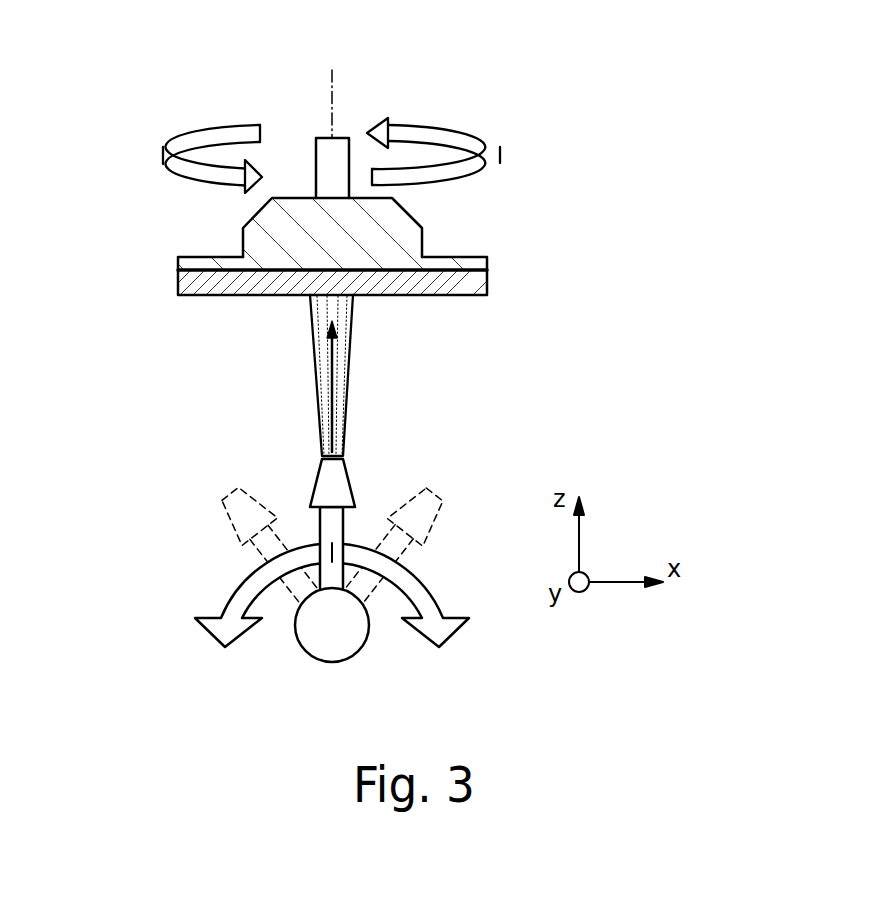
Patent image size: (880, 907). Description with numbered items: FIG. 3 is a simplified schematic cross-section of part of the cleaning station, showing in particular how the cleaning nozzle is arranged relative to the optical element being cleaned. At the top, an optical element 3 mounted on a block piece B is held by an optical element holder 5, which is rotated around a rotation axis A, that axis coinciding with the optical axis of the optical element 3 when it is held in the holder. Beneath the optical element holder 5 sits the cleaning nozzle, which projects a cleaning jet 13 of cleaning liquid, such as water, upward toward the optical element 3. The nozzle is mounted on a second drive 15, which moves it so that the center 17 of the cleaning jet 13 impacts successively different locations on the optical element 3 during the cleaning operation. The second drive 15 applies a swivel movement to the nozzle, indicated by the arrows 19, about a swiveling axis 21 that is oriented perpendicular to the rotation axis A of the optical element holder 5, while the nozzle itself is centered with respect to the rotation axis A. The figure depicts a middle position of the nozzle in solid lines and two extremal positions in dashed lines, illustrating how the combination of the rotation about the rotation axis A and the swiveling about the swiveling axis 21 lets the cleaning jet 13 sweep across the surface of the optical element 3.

The rotation axis A is at (333, 98).
The block piece B is at (255, 221).
The optical element 3 is at (442, 296).
The optical element holder 5 is at (520, 242).
The cleaning jet 13 is at (313, 358).
The second drive 15 is at (165, 548).
The center of the cleaning jet 17 is at (330, 297).
The arrows 19 is at (425, 597).
The swiveling axis 21 is at (360, 648).